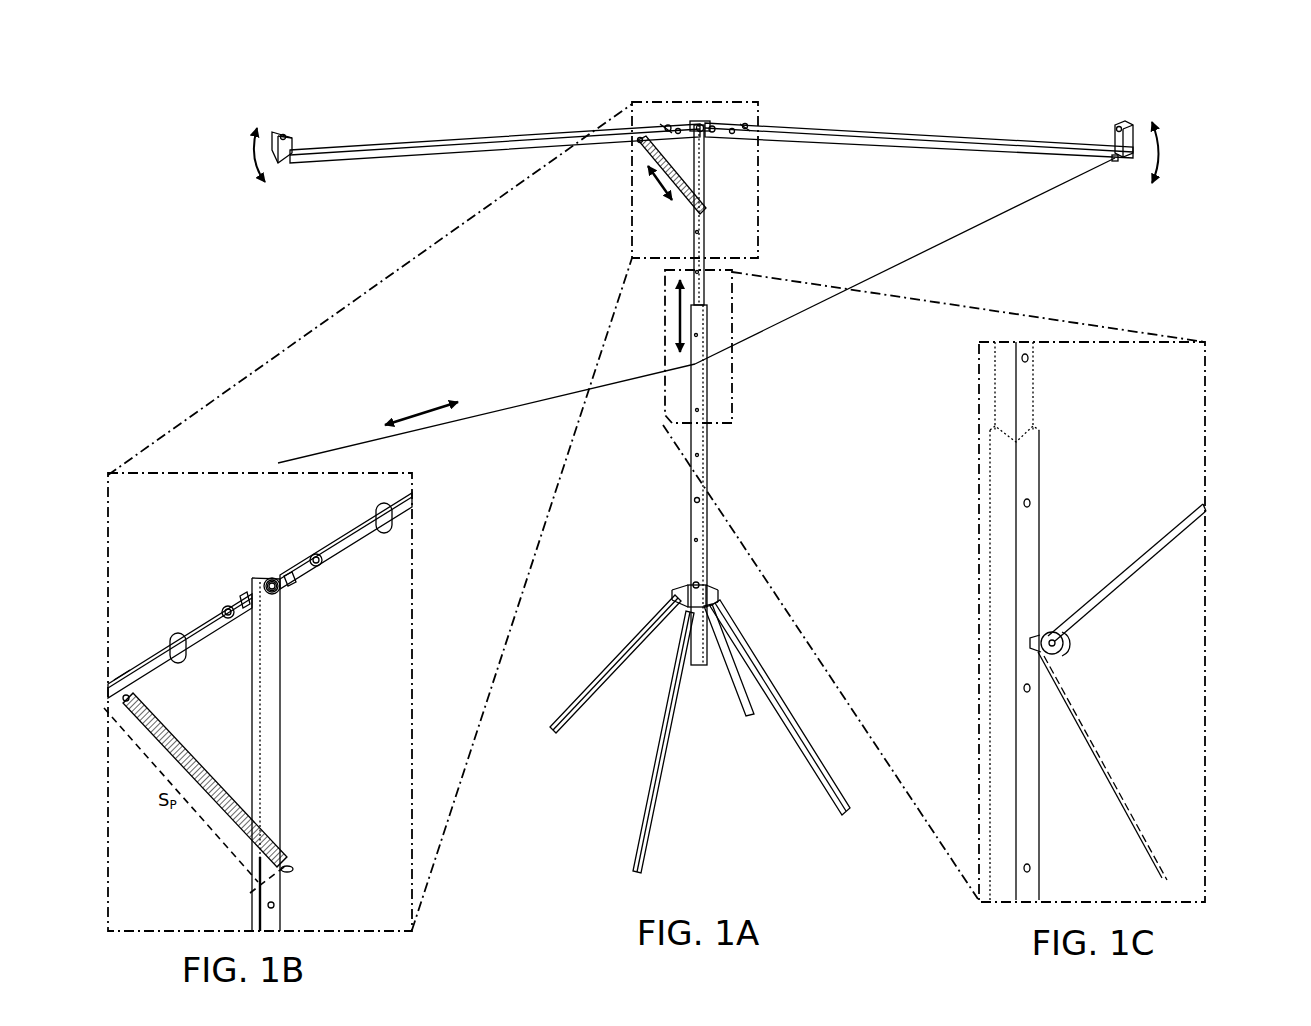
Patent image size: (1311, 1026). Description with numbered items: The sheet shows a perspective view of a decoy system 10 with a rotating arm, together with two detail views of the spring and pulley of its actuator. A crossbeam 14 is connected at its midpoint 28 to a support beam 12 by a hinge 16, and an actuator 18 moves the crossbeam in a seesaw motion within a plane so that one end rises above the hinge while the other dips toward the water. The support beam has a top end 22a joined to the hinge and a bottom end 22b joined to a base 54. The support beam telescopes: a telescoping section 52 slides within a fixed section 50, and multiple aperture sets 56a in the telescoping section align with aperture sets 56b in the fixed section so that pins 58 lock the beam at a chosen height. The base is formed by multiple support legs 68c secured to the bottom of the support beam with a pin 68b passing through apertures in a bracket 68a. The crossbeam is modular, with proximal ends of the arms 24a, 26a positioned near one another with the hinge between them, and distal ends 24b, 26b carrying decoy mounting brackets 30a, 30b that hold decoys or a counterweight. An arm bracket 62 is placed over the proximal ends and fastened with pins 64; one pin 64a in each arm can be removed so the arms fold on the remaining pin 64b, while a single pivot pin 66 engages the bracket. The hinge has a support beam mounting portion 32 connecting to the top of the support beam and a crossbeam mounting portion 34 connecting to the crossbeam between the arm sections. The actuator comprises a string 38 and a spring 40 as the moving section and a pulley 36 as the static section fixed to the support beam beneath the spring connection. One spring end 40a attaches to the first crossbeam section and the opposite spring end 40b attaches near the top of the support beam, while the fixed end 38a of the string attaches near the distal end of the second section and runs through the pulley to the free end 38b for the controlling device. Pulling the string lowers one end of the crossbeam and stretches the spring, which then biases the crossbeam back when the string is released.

In FIG. 1A, the decoy system 10 is at (585, 110).
In FIG. 1A, the support beam 12 is at (770, 395).
In FIG. 1A, the crossbeam 14 is at (477, 155).
In FIG. 1A, the hinge 16 is at (712, 125).
In FIG. 1A, the actuator 18 is at (655, 160).
In FIG. 1A, the top end 22a is at (701, 124).
In FIG. 1A, the bottom end 22b is at (692, 582).
In FIG. 1B, the proximal end of first arm 24a is at (143, 666).
In FIG. 1A, the distal end of first arm 24b is at (286, 163).
In FIG. 1B, the proximal end of second arm 26a is at (360, 540).
In FIG. 1A, the distal end of second arm 26b is at (1136, 150).
In FIG. 1B, the midpoint 28 is at (271, 580).
In FIG. 1A, the decoy mounting bracket 30a is at (284, 135).
In FIG. 1A, the decoy mounting bracket 30b is at (1120, 130).
In FIG. 1B, the support beam mounting portion 32 is at (292, 584).
In FIG. 1B, the crossbeam mounting portion 34 is at (274, 594).
In FIG. 1C, the pulley 36 is at (1048, 641).
In FIG. 1C, the string 38 is at (1176, 527).
In FIG. 1A, the fixed end of string 38a is at (1117, 162).
In FIG. 1A, the free end of string 38b is at (278, 463).
In FIG. 1B, the spring 40 is at (216, 755).
In FIG. 1B, the spring end 40a is at (126, 697).
In FIG. 1B, the spring end 40b is at (290, 866).
In FIG. 1A, the fixed section 50 is at (700, 296).
In FIG. 1C, the fixed section 50 is at (1005, 595).
In FIG. 1A, the telescoping section 52 is at (699, 215).
In FIG. 1C, the telescoping section 52 is at (1003, 402).
In FIG. 1A, the base 54 is at (697, 708).
In FIG. 1A, the aperture sets 56a is at (699, 273).
In FIG. 1A, the aperture sets 56b is at (699, 410).
In FIG. 1A, the pins 58 is at (699, 500).
In FIG. 1B, the arm bracket 62 is at (246, 588).
In FIG. 1B, the pins 64 is at (177, 655).
In FIG. 1B, the removable pin 64a is at (386, 522).
In FIG. 1B, the remaining pin 64b is at (316, 555).
In FIG. 1B, the pivot pin 66 is at (280, 592).
In FIG. 1A, the bracket 68a is at (690, 597).
In FIG. 1A, the pin 68b is at (706, 589).
In FIG. 1A, the support legs 68c is at (782, 722).